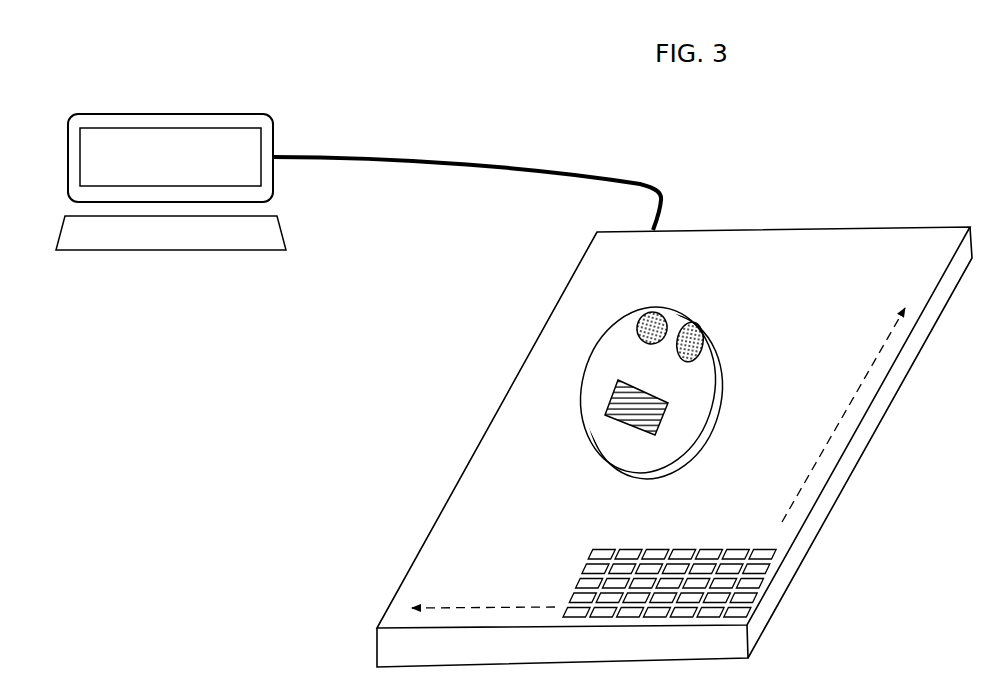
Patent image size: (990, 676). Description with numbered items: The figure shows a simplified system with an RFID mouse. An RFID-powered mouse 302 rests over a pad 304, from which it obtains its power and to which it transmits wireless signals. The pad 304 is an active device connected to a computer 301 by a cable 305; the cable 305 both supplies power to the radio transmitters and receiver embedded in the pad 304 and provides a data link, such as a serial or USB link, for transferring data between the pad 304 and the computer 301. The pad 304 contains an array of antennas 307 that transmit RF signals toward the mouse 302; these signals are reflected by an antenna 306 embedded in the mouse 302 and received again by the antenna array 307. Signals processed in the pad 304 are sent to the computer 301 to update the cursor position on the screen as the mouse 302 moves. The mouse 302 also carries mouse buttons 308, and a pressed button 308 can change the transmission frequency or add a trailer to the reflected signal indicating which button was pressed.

The computer 301 is at (285, 194).
The RFID-powered mouse 302 is at (701, 391).
The pad 304 is at (516, 449).
The cable 305 is at (441, 169).
The antenna 306 is at (656, 406).
The array of antennas 307 is at (739, 547).
The mouse button 308 is at (690, 321).